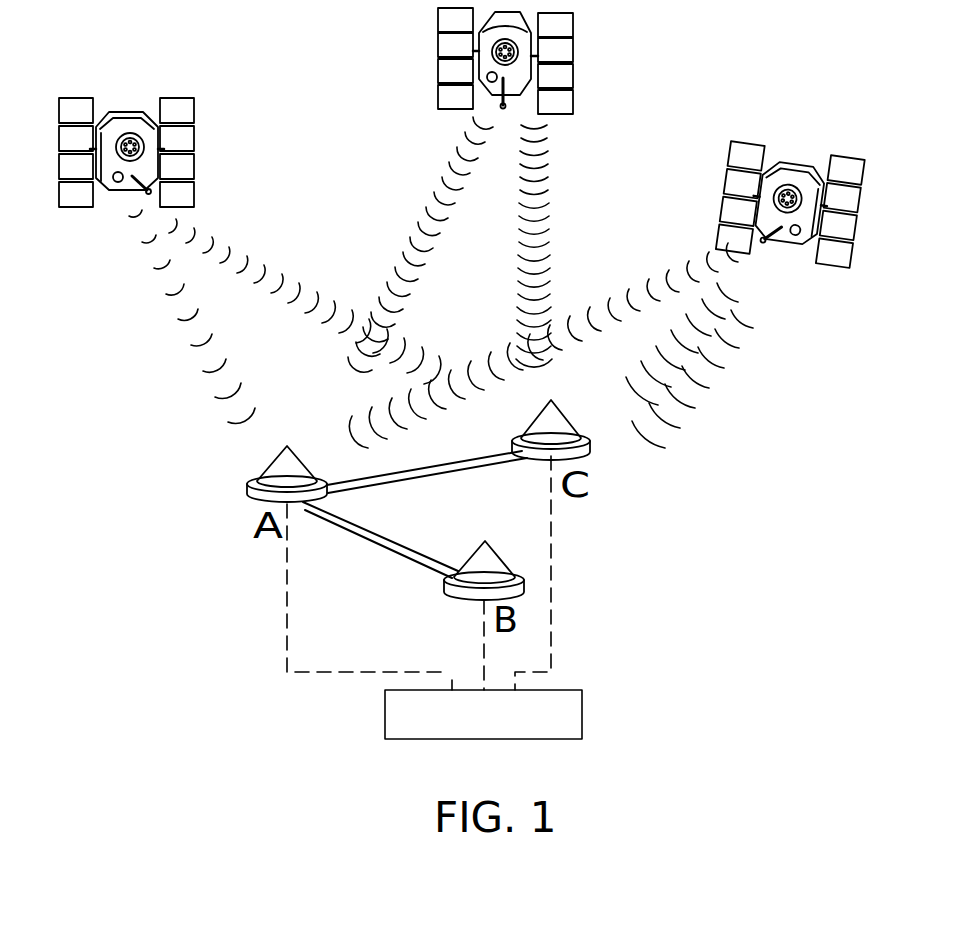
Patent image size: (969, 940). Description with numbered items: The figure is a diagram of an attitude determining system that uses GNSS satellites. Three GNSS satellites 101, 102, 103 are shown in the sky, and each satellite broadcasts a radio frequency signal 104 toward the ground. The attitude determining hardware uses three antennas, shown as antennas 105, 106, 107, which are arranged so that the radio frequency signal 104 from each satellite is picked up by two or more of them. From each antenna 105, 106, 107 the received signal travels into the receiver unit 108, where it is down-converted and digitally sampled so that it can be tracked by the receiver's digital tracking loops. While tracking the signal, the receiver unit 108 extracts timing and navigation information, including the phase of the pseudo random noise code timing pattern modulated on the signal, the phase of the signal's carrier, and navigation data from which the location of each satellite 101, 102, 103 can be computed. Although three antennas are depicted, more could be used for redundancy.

The GNSS satellite 101 is at (112, 194).
The GNSS satellite 102 is at (577, 67).
The GNSS satellite 103 is at (797, 161).
The radio frequency signal 104 is at (428, 214).
The antenna 105 is at (265, 473).
The antenna 106 is at (472, 548).
The antenna 107 is at (528, 410).
The receiver unit 108 is at (583, 728).